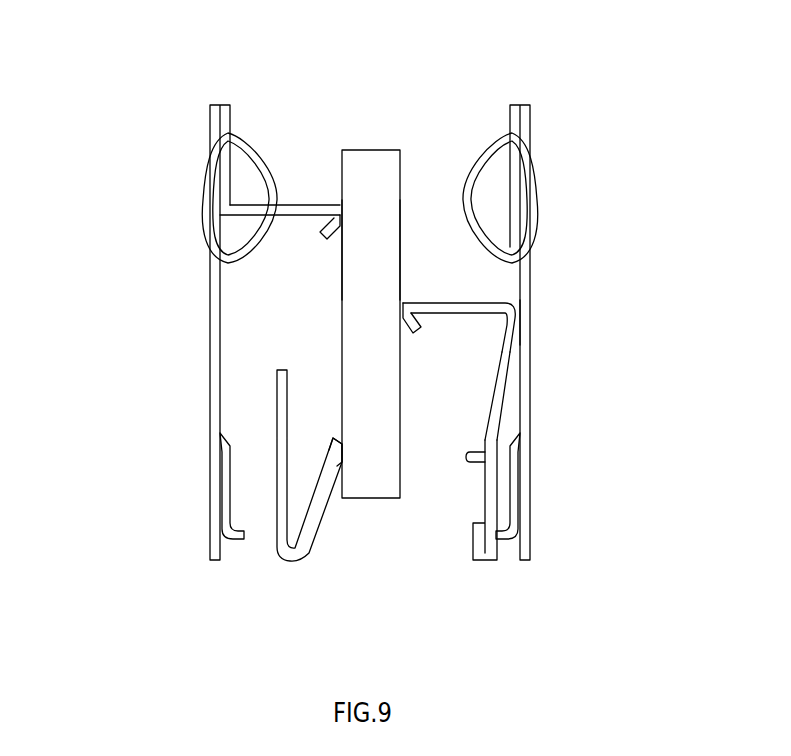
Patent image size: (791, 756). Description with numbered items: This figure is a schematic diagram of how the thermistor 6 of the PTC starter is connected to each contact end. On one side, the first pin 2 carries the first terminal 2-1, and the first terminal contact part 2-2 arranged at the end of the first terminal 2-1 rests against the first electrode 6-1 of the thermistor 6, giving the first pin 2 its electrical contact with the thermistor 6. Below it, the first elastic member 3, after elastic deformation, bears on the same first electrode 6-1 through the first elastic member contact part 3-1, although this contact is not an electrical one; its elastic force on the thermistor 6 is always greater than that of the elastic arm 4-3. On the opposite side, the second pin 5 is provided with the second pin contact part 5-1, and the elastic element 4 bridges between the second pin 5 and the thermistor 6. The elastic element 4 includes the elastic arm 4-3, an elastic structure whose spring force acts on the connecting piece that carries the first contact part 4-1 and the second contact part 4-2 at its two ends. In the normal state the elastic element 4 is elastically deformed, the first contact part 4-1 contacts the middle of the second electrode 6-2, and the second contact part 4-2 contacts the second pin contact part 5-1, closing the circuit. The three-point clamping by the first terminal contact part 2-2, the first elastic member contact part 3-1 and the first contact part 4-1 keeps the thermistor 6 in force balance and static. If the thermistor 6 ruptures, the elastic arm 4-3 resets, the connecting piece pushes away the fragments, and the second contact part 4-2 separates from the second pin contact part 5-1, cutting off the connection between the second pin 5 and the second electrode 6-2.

The first pin 2 is at (220, 326).
The first terminal 2-1 is at (308, 205).
The first terminal contact part 2-2 is at (335, 198).
The first elastic member 3 is at (280, 455).
The first elastic member contact part 3-1 is at (340, 456).
The elastic element 4 is at (497, 487).
The first contact part of the elastic element 4-1 is at (420, 321).
The second contact part of the elastic element 4-2 is at (530, 315).
The elastic arm 4-3 is at (487, 372).
The second pin 5 is at (526, 272).
The second pin contact part 5-1 is at (527, 323).
The thermistor 6 is at (383, 195).
The first electrode 6-1 is at (342, 252).
The second electrode 6-2 is at (396, 262).